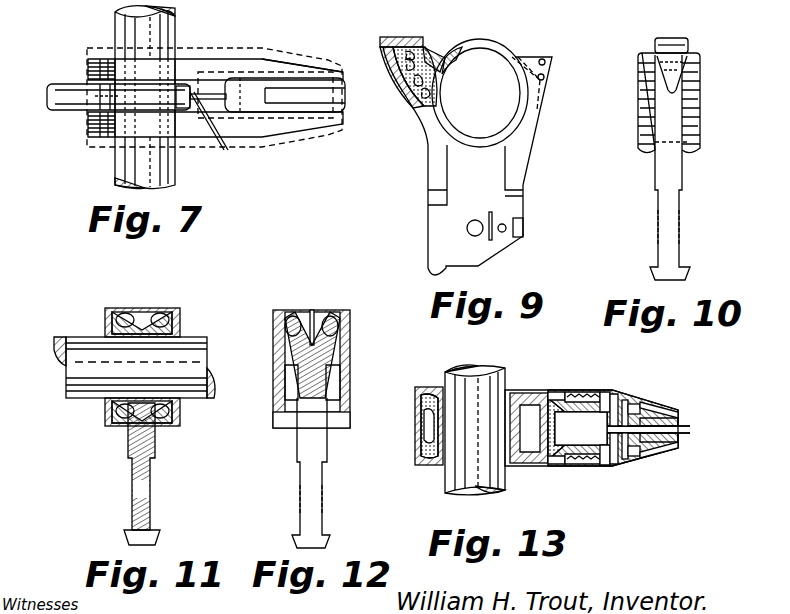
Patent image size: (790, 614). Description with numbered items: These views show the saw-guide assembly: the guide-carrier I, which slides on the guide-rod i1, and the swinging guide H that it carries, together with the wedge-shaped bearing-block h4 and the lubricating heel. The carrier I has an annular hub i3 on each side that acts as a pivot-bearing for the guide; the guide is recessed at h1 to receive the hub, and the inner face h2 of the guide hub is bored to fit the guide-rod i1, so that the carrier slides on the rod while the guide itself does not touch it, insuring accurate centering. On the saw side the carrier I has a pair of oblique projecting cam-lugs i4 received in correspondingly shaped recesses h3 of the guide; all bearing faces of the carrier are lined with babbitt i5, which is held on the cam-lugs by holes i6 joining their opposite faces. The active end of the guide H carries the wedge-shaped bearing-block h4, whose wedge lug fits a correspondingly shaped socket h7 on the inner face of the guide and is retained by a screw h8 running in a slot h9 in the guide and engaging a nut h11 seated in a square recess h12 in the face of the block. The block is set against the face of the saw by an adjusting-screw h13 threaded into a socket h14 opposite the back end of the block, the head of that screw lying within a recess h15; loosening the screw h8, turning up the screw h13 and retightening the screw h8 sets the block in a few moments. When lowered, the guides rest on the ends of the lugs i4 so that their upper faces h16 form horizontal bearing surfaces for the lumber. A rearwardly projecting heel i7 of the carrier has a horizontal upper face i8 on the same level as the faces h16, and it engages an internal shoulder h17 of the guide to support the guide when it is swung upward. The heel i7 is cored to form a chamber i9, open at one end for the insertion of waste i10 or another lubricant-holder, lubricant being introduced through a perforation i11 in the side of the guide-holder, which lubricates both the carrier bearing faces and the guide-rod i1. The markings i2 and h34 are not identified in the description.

In FIG. 7, the guide-carrier I is at (80, 110).
In FIG. 9, the guide-carrier I is at (461, 161).
In FIG. 10, the guide-carrier I is at (680, 180).
In FIG. 11, the guide-carrier I is at (150, 450).
In FIG. 12, the guide-carrier I is at (325, 458).
In FIG. 13, the guide-carrier I is at (415, 430).
In FIG. 7, the guide H is at (208, 60).
In FIG. 11, the guide H is at (162, 308).
In FIG. 12, the guide H is at (325, 310).
In FIG. 13, the guide H is at (535, 392).
In FIG. 7, the guide-rod i1 is at (116, 160).
In FIG. 11, the guide-rod i1 is at (200, 358).
In FIG. 13, the guide-rod i1 is at (462, 490).
In FIG. 11, the wedge block i2 is at (180, 325).
In FIG. 9, the annular hub i3 is at (515, 125).
In FIG. 10, the annular hub i3 is at (700, 118).
In FIG. 13, the annular hub i3 is at (428, 387).
In FIG. 9, the cam-lugs i4 is at (553, 78).
In FIG. 10, the cam-lugs i4 is at (662, 57).
In FIG. 11, the babbitt i5 is at (118, 430).
In FIG. 12, the babbitt i5 is at (285, 350).
In FIG. 13, the babbitt i5 is at (550, 410).
In FIG. 9, the holes i6 is at (545, 77).
In FIG. 12, the holes i6 is at (340, 352).
In FIG. 7, the heel i7 is at (72, 84).
In FIG. 9, the heel i7 is at (415, 42).
In FIG. 7, the upper face i8 is at (57, 96).
In FIG. 9, the upper face i8 is at (384, 40).
In FIG. 9, the chamber i9 is at (410, 87).
In FIG. 9, the waste i10 is at (396, 56).
In FIG. 9, the perforation i11 is at (436, 50).
In FIG. 11, the recess h1 is at (115, 418).
In FIG. 11, the inner face h2 is at (108, 335).
In FIG. 13, the inner face h2 is at (416, 450).
In FIG. 12, the recesses h3 is at (288, 322).
In FIG. 13, the recesses h3 is at (552, 466).
In FIG. 7, the wedge-shaped bearing-block h4 is at (338, 92).
In FIG. 13, the socket h7 is at (676, 411).
In FIG. 13, the screw h8 is at (626, 398).
In FIG. 13, the slot h9 is at (648, 398).
In FIG. 13, the nut h11 is at (608, 430).
In FIG. 13, the square recess h12 is at (636, 404).
In FIG. 13, the adjusting-screw h13 is at (592, 390).
In FIG. 13, the socket h14 is at (614, 392).
In FIG. 13, the recess h15 is at (578, 390).
In FIG. 7, the upper faces h16 is at (262, 62).
In FIG. 7, the internal shoulder h17 is at (213, 133).
In FIG. 13, the nose slot h34 is at (688, 425).